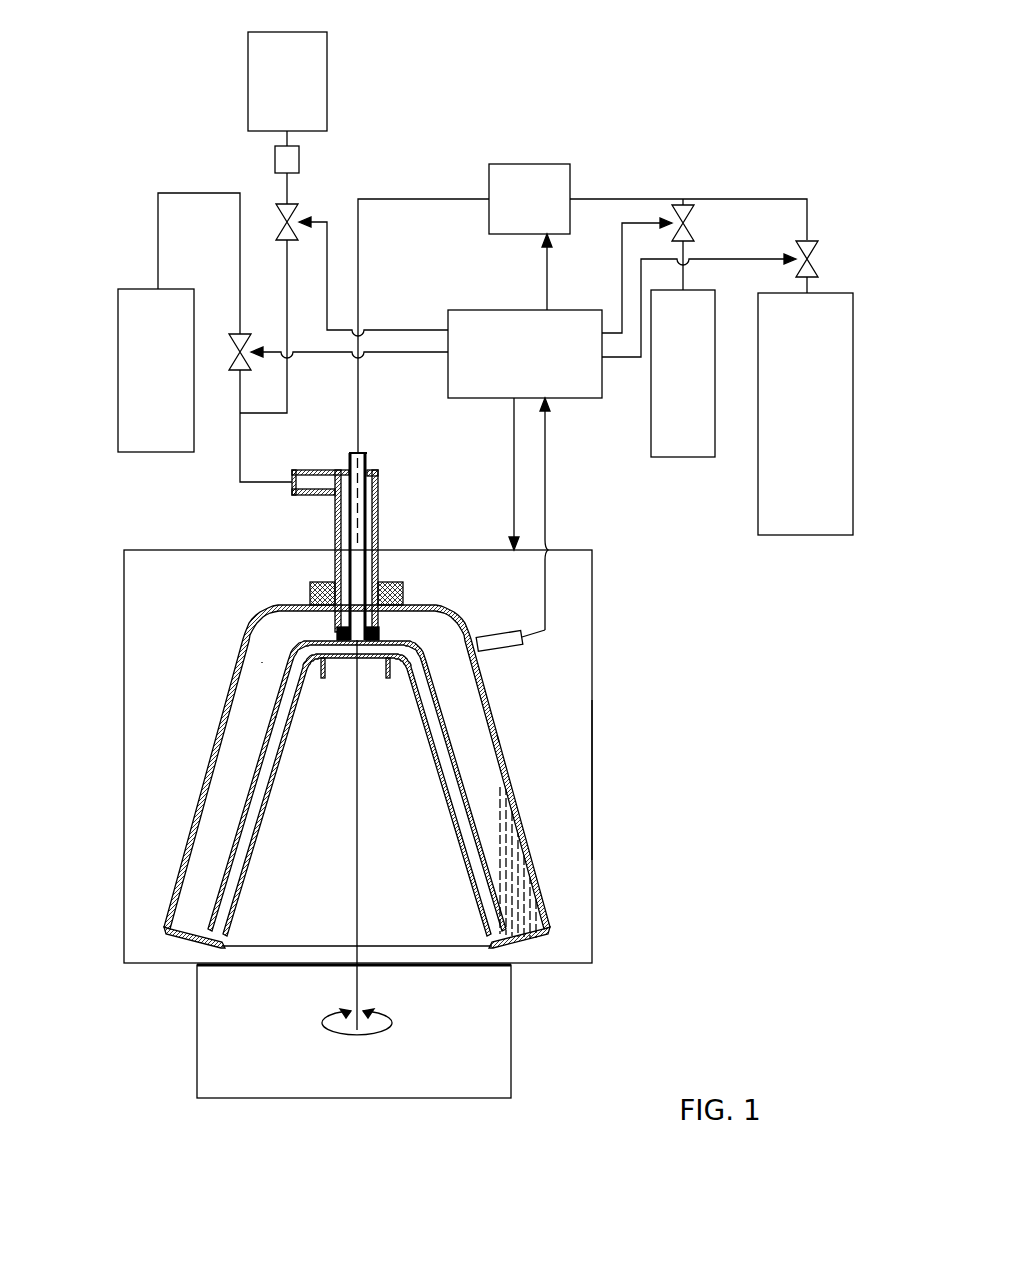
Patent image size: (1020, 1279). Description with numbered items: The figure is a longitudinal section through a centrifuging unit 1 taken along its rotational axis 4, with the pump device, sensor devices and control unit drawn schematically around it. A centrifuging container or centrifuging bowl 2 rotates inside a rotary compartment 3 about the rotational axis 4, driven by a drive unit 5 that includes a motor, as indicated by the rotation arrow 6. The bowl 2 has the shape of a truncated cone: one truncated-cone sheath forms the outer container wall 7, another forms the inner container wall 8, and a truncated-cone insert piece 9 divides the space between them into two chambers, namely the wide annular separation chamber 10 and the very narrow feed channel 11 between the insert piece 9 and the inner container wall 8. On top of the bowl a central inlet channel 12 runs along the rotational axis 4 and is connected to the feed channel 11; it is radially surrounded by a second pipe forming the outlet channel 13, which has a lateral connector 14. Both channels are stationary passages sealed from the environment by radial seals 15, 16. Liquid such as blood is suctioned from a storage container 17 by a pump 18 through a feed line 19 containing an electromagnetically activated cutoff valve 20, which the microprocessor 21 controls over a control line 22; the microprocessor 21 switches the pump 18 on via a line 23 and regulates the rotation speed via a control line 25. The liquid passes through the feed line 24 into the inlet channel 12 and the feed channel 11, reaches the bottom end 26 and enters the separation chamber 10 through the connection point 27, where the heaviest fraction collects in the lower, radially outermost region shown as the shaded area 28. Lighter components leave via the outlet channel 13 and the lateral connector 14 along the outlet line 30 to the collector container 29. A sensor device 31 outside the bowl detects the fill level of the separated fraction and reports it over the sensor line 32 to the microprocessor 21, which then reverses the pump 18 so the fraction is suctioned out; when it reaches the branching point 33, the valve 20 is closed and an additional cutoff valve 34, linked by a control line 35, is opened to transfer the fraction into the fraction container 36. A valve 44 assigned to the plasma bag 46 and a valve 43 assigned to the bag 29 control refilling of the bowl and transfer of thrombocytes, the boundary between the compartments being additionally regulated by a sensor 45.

The centrifuging unit 1 is at (582, 781).
The centrifuging container 2 is at (500, 740).
The rotary compartment 3 is at (577, 910).
The rotational axis 4 is at (352, 967).
The drive unit 5 is at (498, 1020).
The rotation arrow 6 is at (393, 1027).
The outer container wall 7 is at (215, 748).
The inner container wall 8 is at (258, 802).
The insert piece 9 is at (238, 838).
The separation chamber 10 is at (262, 662).
The feed channel 11 is at (275, 717).
The inlet channel 12 is at (366, 476).
The outlet channel 13 is at (373, 507).
The lateral connector 14 is at (312, 485).
The radial seal 15 is at (338, 628).
The radial seal 16 is at (400, 580).
The storage container 17 is at (797, 513).
The pump 18 is at (524, 170).
The feed line 19 is at (601, 196).
The cutoff valve 20 is at (809, 238).
The microprocessor 21 is at (503, 320).
The control line 22 is at (731, 258).
The line 23 is at (546, 282).
The feed line 24 is at (402, 197).
The control line 25 is at (510, 448).
The bottom end 26 is at (205, 938).
The connection point 27 is at (172, 930).
The shaded area 28 is at (525, 883).
The collector container 29 is at (137, 300).
The outlet line 30 is at (204, 190).
The sensor device 31 is at (524, 640).
The sensor line 32 is at (547, 498).
The branching point 33 is at (682, 202).
The cutoff valve 34 is at (690, 222).
The control line 35 is at (633, 224).
The fraction container 36 is at (680, 445).
The valve 43 is at (239, 334).
The valve 44 is at (293, 212).
The sensor 45 is at (285, 158).
The bag 46 is at (312, 78).